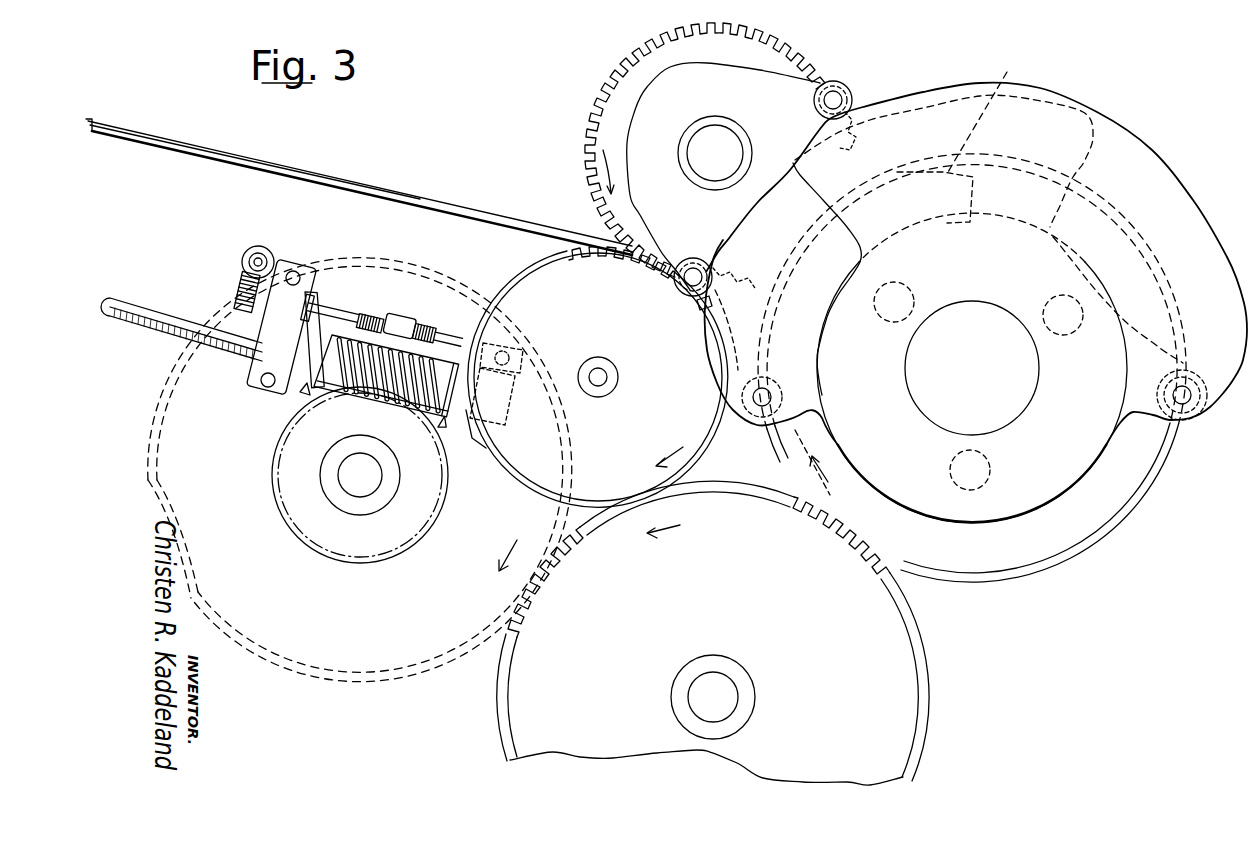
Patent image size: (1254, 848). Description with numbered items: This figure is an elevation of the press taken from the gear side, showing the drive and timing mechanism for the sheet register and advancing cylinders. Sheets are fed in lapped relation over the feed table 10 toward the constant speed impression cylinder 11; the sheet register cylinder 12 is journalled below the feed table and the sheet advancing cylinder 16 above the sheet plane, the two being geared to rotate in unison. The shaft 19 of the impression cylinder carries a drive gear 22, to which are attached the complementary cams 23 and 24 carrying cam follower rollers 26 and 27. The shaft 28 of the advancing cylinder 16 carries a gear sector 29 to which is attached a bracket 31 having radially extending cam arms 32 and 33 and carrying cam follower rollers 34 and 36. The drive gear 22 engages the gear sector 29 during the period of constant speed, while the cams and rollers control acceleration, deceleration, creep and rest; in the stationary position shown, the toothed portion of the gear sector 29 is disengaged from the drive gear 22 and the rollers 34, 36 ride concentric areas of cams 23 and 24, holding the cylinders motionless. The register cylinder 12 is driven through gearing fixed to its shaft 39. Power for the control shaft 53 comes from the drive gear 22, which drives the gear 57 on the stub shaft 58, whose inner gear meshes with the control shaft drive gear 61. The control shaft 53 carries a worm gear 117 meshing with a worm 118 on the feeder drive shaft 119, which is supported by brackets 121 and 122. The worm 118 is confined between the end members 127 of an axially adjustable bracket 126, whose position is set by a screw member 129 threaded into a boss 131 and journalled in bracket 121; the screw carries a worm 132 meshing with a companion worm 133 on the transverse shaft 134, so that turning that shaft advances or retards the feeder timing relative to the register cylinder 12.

The feed table 10 is at (248, 170).
The impression cylinder 11 is at (1068, 537).
The sheet register cylinder 12 is at (532, 288).
The sheet advancing cylinder 16 is at (772, 58).
The shaft 19 is at (972, 368).
The drive gear 22 is at (905, 572).
The cam 23 is at (1158, 148).
The cam 24 is at (733, 412).
The cam follower roller 26 is at (1186, 414).
The cam follower roller 27 is at (809, 462).
The shaft 28 is at (715, 153).
The gear sector 29 is at (588, 167).
The bracket 31 is at (723, 176).
The cam arm 32 is at (989, 206).
The cam arm 33 is at (775, 398).
The cam follower roller 34 is at (850, 93).
The cam follower roller 36 is at (694, 266).
The shaft 39 is at (619, 381).
The control shaft 53 is at (360, 470).
The gear 57 is at (883, 566).
The stub shaft 58 is at (713, 633).
The control shaft drive gear 61 is at (502, 632).
The worm gear 117 is at (300, 515).
The worm 118 is at (408, 350).
The feeder drive shaft 119 is at (152, 326).
The bracket 121 is at (252, 386).
The bracket 122 is at (482, 442).
The bracket 126 is at (450, 348).
The end members 127 is at (304, 394).
The screw member 129 is at (328, 302).
The boss 131 is at (392, 316).
The worm 132 is at (236, 296).
The worm 133 is at (248, 256).
The transverse shaft 134 is at (262, 262).